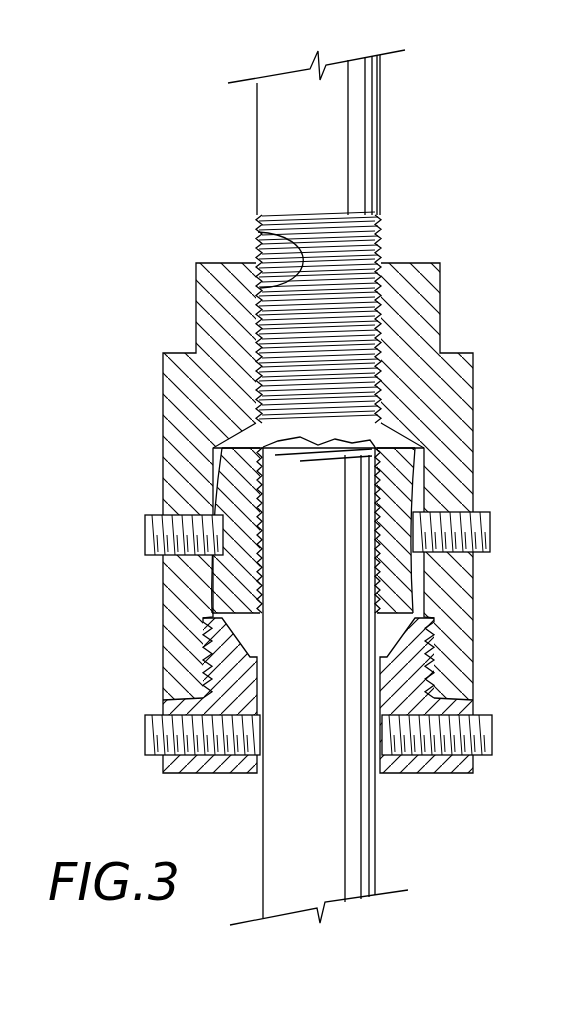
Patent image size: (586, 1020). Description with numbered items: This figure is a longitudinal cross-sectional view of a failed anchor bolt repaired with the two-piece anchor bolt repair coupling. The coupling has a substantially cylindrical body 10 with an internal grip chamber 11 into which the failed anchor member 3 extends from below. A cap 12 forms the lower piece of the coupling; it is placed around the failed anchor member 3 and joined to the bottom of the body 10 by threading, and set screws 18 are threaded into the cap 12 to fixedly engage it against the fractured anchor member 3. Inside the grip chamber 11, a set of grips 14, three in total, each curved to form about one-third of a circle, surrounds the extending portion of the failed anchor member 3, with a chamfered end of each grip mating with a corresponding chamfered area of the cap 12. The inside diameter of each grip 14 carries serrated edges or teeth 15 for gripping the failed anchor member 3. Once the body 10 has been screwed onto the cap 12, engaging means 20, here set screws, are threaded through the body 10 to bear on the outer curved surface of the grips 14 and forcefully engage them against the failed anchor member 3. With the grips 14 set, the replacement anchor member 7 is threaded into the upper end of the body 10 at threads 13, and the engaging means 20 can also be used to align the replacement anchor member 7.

The failed anchor member 3 is at (355, 853).
The replacement anchor member 7 is at (278, 145).
The body 10 is at (197, 326).
The internal grip chamber 11 is at (217, 495).
The cap 12 is at (462, 705).
The threads 13 is at (258, 233).
The grips 14 is at (403, 478).
The teeth 15 is at (380, 607).
The set screws 18 is at (150, 725).
The engaging means 20 is at (158, 546).